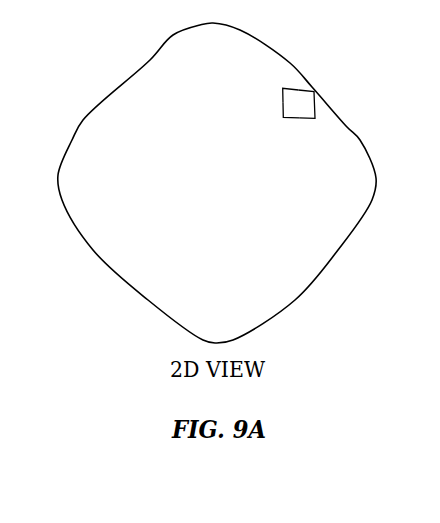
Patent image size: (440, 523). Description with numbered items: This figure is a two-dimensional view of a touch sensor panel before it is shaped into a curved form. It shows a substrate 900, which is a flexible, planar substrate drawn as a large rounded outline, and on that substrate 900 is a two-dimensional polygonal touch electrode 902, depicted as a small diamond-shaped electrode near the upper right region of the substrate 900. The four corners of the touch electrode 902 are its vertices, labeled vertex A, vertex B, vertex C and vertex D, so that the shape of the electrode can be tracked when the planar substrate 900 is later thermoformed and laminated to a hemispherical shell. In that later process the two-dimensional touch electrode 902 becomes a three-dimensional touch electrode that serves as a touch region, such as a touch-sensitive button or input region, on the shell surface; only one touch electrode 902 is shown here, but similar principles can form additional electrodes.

The substrate 900 is at (136, 15).
The two-dimensional polygonal touch electrode 902 is at (337, 103).
The vertex A is at (282, 118).
The vertex B is at (314, 119).
The vertex C is at (314, 89).
The vertex D is at (281, 87).